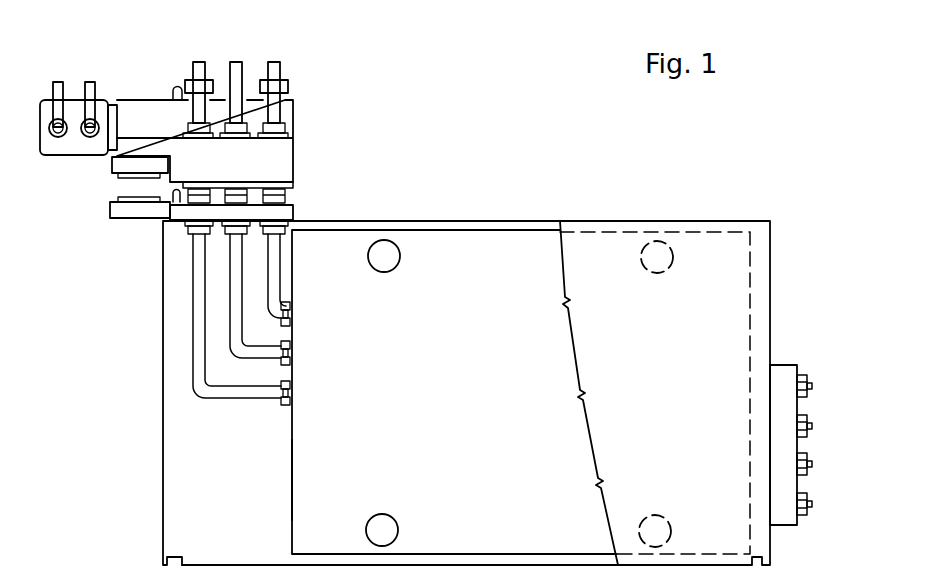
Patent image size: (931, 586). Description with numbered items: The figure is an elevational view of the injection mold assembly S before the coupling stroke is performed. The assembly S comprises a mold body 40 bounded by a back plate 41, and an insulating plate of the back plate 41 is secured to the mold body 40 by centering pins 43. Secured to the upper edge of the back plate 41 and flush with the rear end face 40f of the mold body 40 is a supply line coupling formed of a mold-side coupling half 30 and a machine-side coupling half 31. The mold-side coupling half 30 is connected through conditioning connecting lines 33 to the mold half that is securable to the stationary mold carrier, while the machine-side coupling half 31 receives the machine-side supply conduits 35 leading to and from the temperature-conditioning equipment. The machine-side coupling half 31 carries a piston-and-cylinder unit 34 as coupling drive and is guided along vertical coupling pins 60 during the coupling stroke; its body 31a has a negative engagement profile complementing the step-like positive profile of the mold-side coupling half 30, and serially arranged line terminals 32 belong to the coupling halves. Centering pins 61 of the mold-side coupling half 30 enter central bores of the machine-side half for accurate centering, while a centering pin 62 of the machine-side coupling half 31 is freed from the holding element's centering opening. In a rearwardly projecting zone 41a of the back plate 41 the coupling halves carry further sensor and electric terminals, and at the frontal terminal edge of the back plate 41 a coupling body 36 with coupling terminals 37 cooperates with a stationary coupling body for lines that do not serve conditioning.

The mold-side coupling half 30 is at (305, 211).
The machine-side coupling half 31 is at (300, 104).
The body of the machine-side coupling half 31a is at (266, 190).
The line terminals 32 is at (283, 197).
The conditioning connecting lines 33 is at (277, 318).
The piston-and-cylinder unit 34 is at (72, 143).
The machine-side supply conduits 35 is at (270, 62).
The coupling body 36 is at (778, 380).
The coupling terminals 37 is at (812, 421).
The mold body 40 is at (513, 409).
The rear end face of the mold body 40f is at (280, 481).
The back plate 41 is at (595, 262).
The rearwardly projecting zone of the back plate 41a is at (245, 552).
The centering pins 43 is at (386, 257).
The coupling pins 60 is at (294, 69).
The centering pins 61 is at (163, 199).
The centering pin 62 is at (177, 87).
The injection mold assembly S is at (629, 212).